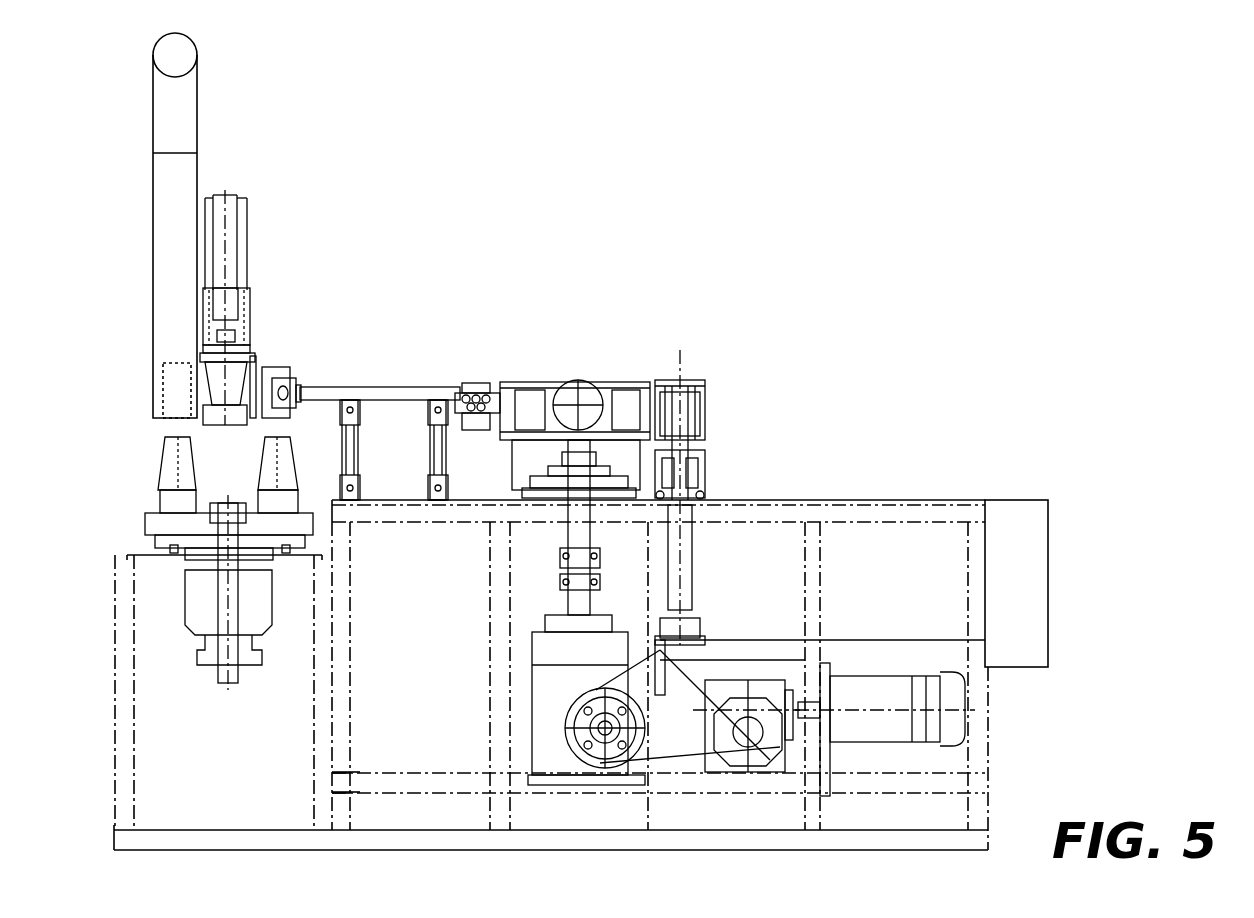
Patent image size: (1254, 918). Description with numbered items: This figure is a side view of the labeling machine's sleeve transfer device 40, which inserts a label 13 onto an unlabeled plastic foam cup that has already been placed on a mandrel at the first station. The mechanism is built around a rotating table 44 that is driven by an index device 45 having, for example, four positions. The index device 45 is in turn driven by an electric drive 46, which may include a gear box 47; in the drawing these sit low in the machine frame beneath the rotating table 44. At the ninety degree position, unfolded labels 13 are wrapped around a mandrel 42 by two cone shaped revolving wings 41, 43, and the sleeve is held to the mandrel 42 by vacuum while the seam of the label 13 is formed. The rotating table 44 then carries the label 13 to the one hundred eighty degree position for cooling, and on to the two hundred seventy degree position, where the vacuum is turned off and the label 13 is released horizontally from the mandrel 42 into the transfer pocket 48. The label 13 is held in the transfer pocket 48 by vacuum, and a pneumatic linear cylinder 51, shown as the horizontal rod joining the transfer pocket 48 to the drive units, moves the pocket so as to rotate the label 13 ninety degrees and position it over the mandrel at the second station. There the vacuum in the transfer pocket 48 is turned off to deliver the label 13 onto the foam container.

The label 13 is at (268, 368).
The sleeve transfer device 40 is at (866, 292).
The cone shaped revolving wing 41 is at (692, 380).
The mandrel 42 is at (700, 405).
The cone shaped revolving wing 43 is at (705, 432).
The rotating table 44 is at (578, 382).
The index device 45 is at (530, 748).
The electric drive 46 is at (945, 745).
The gear box 47 is at (735, 744).
The transfer pocket 48 is at (300, 388).
The pneumatic linear cylinder 51 is at (428, 390).